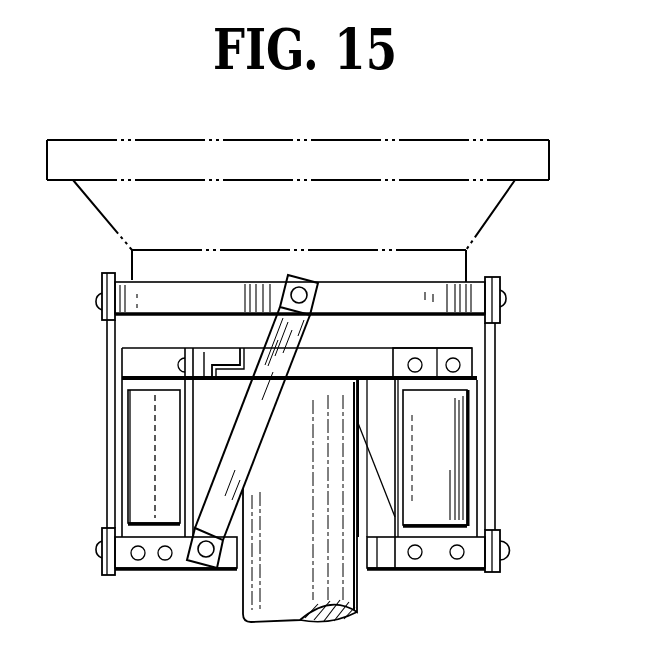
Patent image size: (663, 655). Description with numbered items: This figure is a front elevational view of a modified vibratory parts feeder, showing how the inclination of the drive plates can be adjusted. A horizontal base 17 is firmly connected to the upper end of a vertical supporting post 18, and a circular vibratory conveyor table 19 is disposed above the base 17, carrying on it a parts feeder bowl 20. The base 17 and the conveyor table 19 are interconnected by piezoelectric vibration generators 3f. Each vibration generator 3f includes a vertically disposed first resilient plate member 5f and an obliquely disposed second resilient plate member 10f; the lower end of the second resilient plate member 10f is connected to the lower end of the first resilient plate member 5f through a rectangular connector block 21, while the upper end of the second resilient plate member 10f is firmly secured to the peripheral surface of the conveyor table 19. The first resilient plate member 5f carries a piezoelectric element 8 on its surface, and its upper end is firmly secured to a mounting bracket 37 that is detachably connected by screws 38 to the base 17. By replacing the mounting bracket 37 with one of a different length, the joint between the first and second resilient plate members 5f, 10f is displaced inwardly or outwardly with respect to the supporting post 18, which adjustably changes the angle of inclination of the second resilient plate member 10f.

The parts feeder bowl 20 is at (549, 171).
The circular vibratory conveyor table 19 is at (470, 283).
The horizontal base 17 is at (373, 358).
The screws 38 is at (243, 345).
The mounting bracket 37 is at (205, 358).
The second resilient plate member 10f is at (495, 373).
The first resilient plate member 5f is at (195, 492).
The rectangular connector block 21 is at (480, 563).
The piezoelectric vibration generator 3f is at (447, 443).
The piezoelectric element 8 is at (453, 497).
The vertical supporting post 18 is at (243, 598).